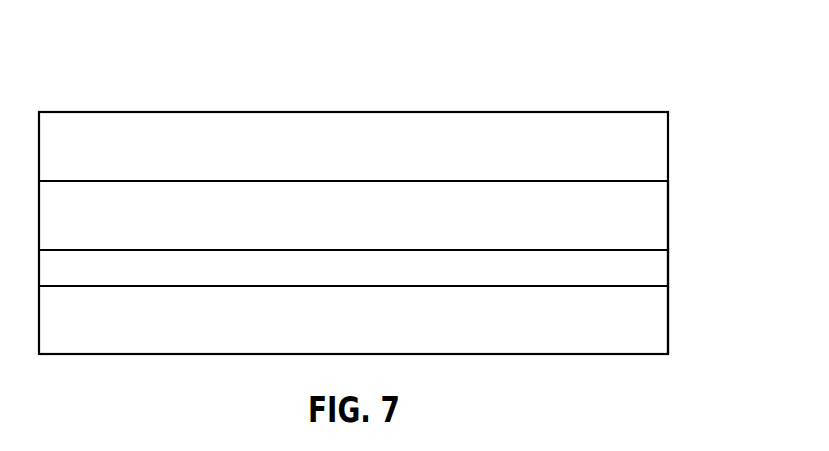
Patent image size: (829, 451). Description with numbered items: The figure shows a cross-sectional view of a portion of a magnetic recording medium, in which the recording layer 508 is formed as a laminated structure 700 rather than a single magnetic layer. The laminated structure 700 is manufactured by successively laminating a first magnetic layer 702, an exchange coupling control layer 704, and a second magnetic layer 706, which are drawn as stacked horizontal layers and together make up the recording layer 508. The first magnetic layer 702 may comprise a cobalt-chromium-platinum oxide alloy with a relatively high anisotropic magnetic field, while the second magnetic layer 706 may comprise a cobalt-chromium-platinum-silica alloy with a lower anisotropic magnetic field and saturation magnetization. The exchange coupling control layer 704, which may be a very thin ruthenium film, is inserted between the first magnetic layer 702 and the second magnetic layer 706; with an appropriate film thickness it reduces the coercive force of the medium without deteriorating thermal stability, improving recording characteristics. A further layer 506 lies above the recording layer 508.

The laminated structure 700 is at (166, 76).
The top layer 506 is at (372, 155).
The second magnetic layer 706 is at (372, 227).
The exchange coupling control layer 704 is at (372, 278).
The first magnetic layer 702 is at (372, 330).
The recording layer 508 is at (685, 181).